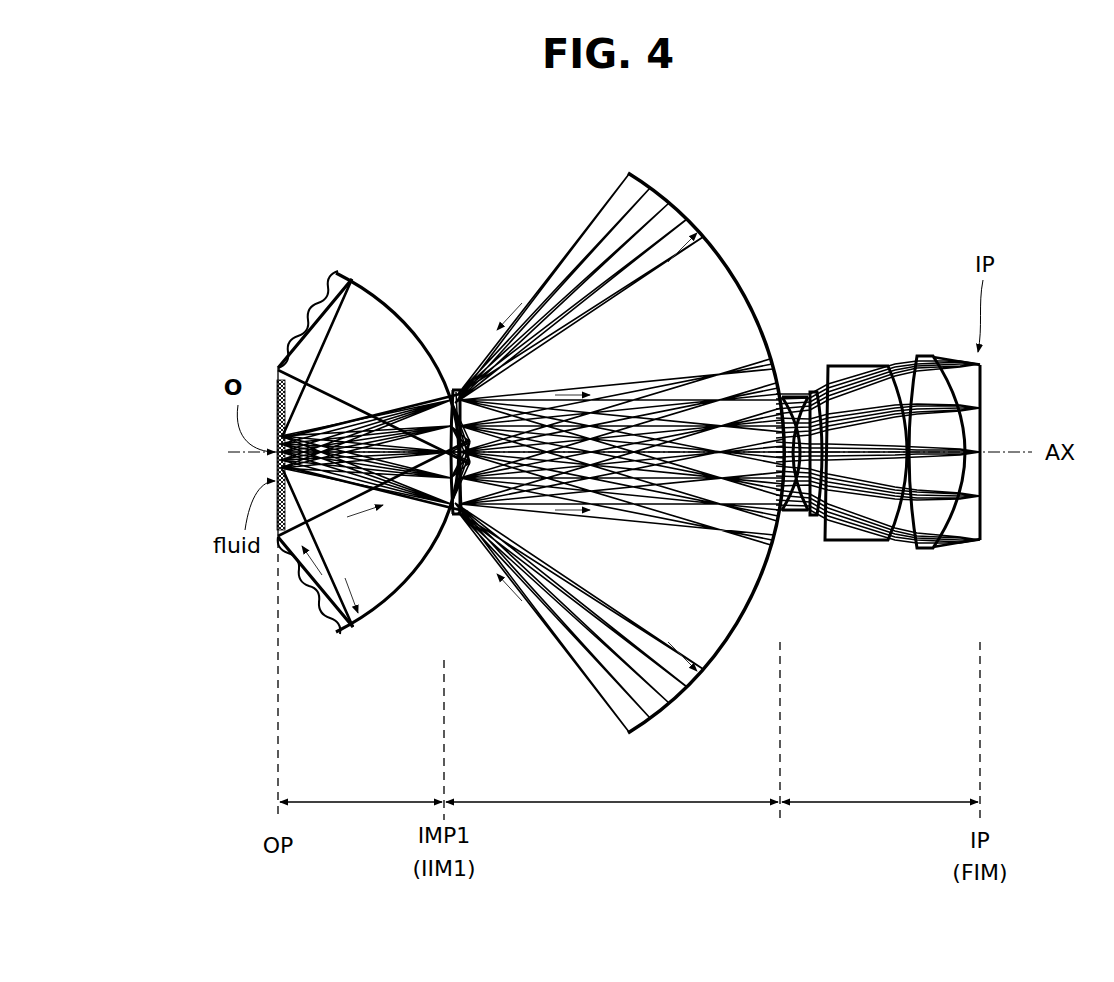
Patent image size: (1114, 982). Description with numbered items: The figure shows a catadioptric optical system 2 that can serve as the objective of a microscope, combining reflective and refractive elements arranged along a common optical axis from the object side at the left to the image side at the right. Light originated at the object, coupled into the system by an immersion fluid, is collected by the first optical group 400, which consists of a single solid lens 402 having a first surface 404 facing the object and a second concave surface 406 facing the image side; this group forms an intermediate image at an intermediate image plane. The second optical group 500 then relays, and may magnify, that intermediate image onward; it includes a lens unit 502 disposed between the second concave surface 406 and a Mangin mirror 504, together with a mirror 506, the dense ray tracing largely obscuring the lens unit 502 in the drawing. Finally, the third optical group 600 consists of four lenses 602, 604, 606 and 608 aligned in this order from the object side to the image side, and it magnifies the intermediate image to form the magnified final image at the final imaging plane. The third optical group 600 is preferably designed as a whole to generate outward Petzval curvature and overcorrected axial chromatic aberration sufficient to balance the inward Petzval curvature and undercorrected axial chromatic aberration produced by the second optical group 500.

The optical system 2 is at (225, 113).
The first optical group 400 is at (361, 787).
The solid lens 402 is at (368, 452).
The first surface 404 is at (290, 386).
The second concave surface 406 is at (393, 320).
The second optical group 500 is at (612, 787).
The lens unit 502 is at (453, 387).
The Mangin mirror 504 is at (470, 412).
The mirror 506 is at (722, 247).
The third optical group 600 is at (880, 787).
The lens 602 is at (793, 388).
The lens 604 is at (815, 390).
The lens 606 is at (862, 363).
The lens 608 is at (925, 352).